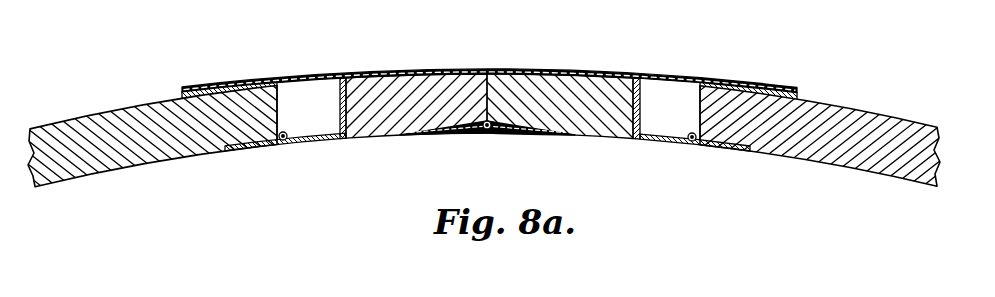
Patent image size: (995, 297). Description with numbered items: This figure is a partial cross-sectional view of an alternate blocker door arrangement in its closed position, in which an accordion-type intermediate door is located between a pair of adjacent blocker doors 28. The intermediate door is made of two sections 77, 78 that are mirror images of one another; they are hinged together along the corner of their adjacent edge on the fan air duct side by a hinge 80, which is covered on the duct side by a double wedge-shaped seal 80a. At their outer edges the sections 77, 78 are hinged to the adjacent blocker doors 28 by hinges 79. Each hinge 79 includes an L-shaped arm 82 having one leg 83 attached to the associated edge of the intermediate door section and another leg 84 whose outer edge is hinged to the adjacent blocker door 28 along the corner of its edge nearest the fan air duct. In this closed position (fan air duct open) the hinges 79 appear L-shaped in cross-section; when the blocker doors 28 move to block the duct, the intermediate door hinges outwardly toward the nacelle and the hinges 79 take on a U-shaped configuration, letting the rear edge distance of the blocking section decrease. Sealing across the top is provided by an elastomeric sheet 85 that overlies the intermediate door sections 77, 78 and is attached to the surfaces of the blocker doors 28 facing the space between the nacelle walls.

The blocker door 28 is at (128, 112).
The section of intermediate door 77 is at (423, 88).
The section of intermediate door 78 is at (556, 88).
The hinge 79 is at (282, 140).
The hinge 80 is at (487, 131).
The double wedge-shaped seal 80a is at (464, 138).
The L-shaped arm 82 is at (330, 145).
The leg 83 is at (339, 100).
The leg 84 is at (305, 143).
The elastomeric sheet 85 is at (480, 70).